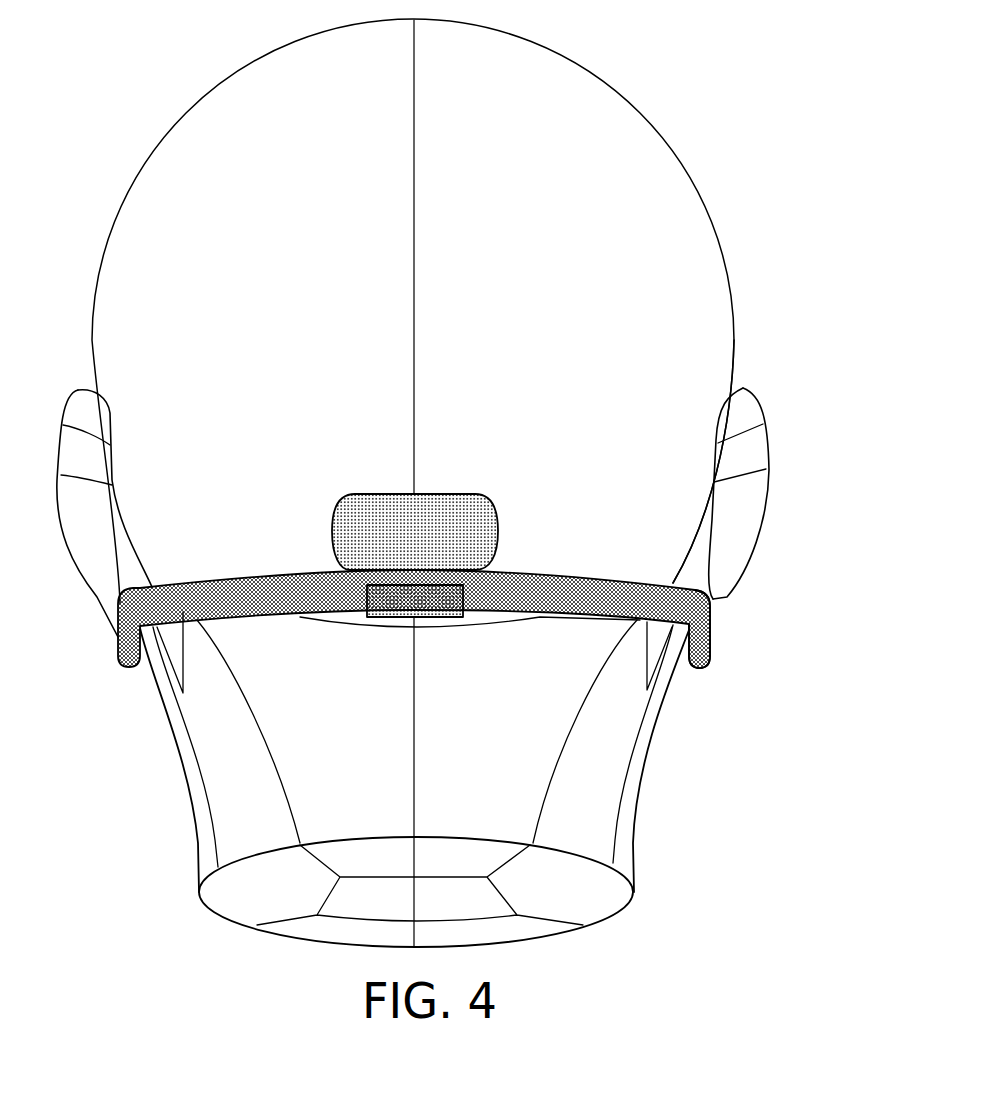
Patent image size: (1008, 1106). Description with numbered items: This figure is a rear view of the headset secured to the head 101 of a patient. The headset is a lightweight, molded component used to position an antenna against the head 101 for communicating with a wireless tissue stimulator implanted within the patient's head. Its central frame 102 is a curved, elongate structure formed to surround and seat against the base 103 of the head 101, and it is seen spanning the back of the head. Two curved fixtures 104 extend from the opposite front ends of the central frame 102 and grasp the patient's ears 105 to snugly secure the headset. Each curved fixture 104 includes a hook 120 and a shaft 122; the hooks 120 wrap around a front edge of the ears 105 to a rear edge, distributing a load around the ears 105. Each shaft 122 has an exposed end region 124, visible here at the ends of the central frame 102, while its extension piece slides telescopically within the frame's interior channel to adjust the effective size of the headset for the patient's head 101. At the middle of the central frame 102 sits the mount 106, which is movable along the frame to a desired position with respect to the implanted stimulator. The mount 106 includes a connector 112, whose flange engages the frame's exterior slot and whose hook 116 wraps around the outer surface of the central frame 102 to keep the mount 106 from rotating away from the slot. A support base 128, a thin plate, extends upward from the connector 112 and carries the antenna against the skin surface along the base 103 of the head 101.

The head 101 is at (600, 78).
The central frame 102 is at (208, 578).
The base 103 is at (305, 637).
The curved fixture 104 is at (733, 342).
The ear 105 is at (770, 450).
The mount 106 is at (468, 427).
The connector 112 is at (578, 730).
The hook 116 is at (440, 620).
The hook 120 is at (777, 382).
The shaft 122 is at (784, 629).
The exposed end region 124 is at (712, 653).
The support base 128 is at (447, 483).